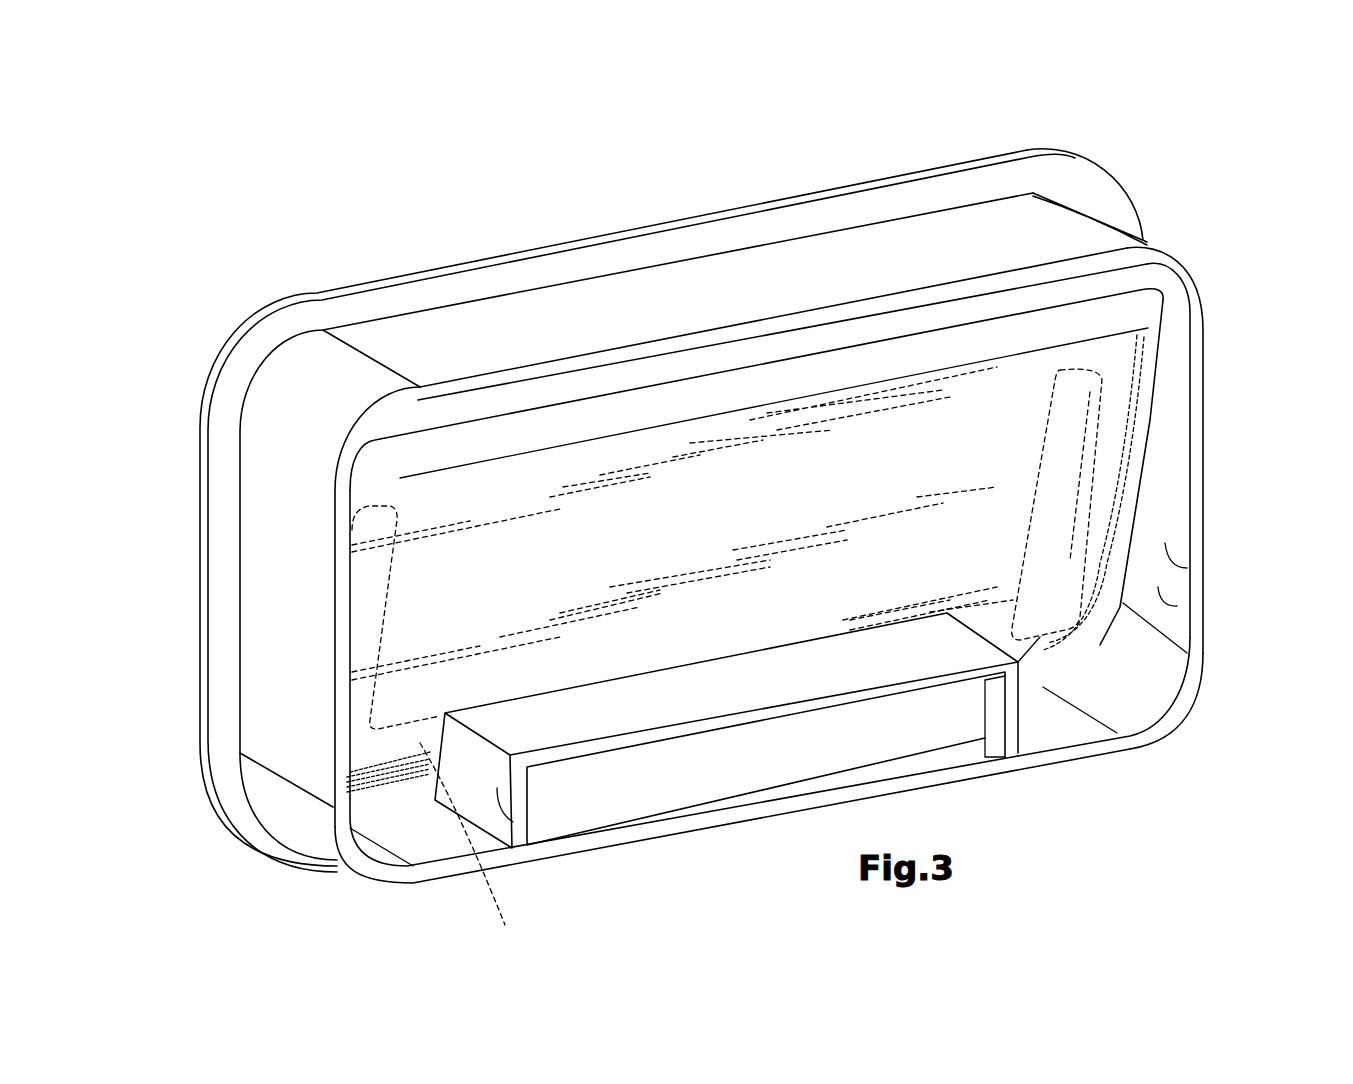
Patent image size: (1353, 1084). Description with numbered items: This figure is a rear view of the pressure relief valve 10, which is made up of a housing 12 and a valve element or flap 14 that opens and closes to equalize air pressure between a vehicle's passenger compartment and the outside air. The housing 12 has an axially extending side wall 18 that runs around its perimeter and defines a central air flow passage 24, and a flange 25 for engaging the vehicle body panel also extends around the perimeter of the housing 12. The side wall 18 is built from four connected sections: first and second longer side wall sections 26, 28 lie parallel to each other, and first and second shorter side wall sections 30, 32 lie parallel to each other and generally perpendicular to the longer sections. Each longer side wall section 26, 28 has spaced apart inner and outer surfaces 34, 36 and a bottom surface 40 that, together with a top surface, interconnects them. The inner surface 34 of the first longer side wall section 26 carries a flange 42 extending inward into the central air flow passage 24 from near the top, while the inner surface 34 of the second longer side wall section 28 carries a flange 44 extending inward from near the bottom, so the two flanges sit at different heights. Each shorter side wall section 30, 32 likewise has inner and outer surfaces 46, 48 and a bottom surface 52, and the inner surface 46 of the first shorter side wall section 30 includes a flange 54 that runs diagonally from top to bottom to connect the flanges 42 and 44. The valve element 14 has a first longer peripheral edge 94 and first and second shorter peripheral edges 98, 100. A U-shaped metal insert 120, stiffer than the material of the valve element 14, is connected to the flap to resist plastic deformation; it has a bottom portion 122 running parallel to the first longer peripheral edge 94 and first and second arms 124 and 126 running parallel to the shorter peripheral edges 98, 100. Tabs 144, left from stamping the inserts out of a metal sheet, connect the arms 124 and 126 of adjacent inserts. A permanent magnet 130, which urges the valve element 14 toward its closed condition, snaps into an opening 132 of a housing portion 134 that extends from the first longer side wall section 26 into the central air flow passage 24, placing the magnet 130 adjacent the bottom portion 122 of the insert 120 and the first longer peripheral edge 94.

The pressure relief valve 10 is at (232, 240).
The housing 12 is at (538, 320).
The valve element 14 is at (690, 470).
The side wall 18 is at (448, 343).
The central air flow passage 24 is at (1187, 568).
The flange 25 is at (862, 190).
The first longer side wall section 26 is at (1060, 727).
The second longer side wall section 28 is at (987, 257).
The first shorter side wall section 30 is at (1170, 425).
The second shorter side wall section 32 is at (290, 668).
The inner surface 34 is at (1037, 727).
The outer surface 36 is at (772, 272).
The bottom surface 40 is at (636, 350).
The flange 42 is at (407, 790).
The flange 44 is at (1043, 330).
The inner surface 46 is at (1200, 617).
The outer surface 48 is at (293, 570).
The bottom surface 52 is at (1200, 533).
The flange 54 is at (1123, 480).
The first longer peripheral edge 94 is at (383, 787).
The first shorter peripheral edge 98 is at (1140, 330).
The second shorter peripheral edge 100 is at (350, 523).
The insert 120 is at (1085, 625).
The bottom portion 122 is at (485, 846).
The first arm 124 is at (1095, 380).
The second arm 126 is at (365, 583).
The permanent magnet 130 is at (777, 755).
The opening 132 is at (1005, 740).
The housing portion 134 is at (528, 833).
The tabs 144 is at (1075, 450).